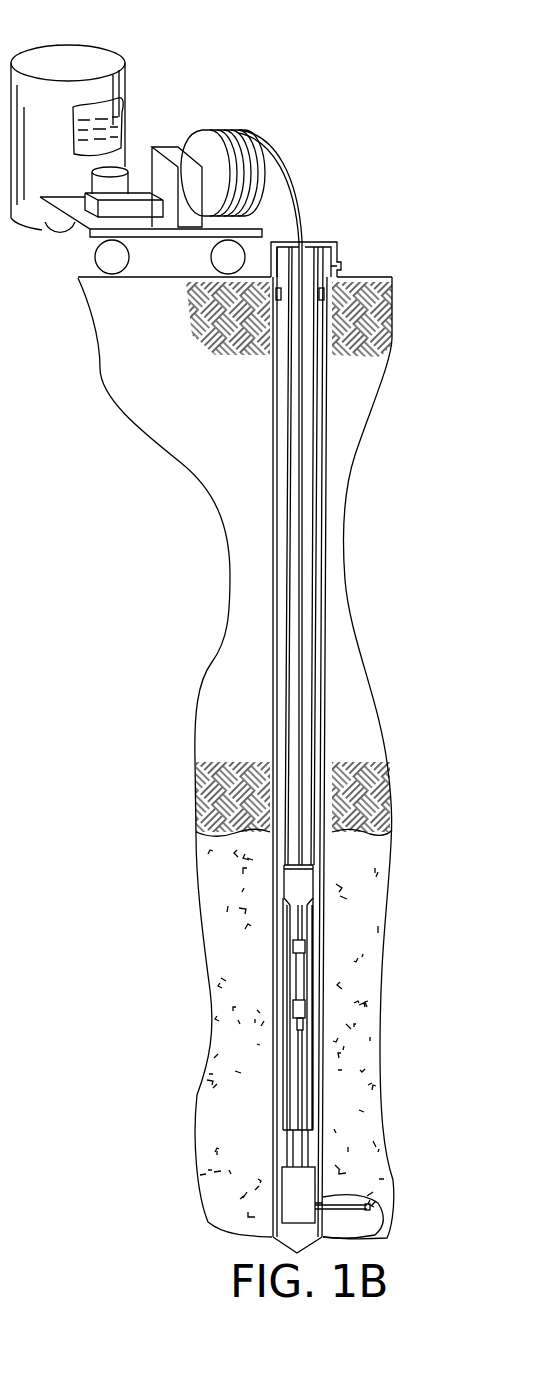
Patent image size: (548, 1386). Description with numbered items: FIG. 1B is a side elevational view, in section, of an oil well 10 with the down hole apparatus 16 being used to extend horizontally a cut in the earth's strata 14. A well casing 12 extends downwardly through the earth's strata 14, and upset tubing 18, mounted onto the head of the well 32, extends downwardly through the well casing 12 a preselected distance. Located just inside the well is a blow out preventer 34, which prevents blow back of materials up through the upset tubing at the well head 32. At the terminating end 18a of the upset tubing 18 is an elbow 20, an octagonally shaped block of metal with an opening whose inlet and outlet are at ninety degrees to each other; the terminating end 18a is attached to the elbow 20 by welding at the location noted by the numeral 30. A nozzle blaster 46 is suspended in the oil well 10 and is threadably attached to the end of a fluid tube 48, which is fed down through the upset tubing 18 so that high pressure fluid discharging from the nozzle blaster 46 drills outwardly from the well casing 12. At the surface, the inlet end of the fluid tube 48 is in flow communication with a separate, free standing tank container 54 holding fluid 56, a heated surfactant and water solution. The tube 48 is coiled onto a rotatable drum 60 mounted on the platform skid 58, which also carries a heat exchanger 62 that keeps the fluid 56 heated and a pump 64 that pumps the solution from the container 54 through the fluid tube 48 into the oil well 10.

The oil well 10 is at (387, 263).
The well casing 12 is at (333, 437).
The earth's strata 14 is at (343, 668).
The apparatus 16 is at (340, 1120).
The upset tubing 18 is at (302, 883).
The terminating end 18a is at (322, 1148).
The elbow 20 is at (307, 1187).
The weld location 30 is at (285, 1167).
The well head 32 is at (318, 242).
The blow out preventer 34 is at (327, 300).
The nozzle blaster 46 is at (367, 1220).
The fluid tube 48 is at (285, 150).
The tank container 54 is at (85, 48).
The fluid 56 is at (120, 165).
The platform skid 58 is at (84, 236).
The rotatable drum 60 is at (223, 130).
The heat exchanger 62 is at (170, 147).
The pump 64 is at (137, 157).